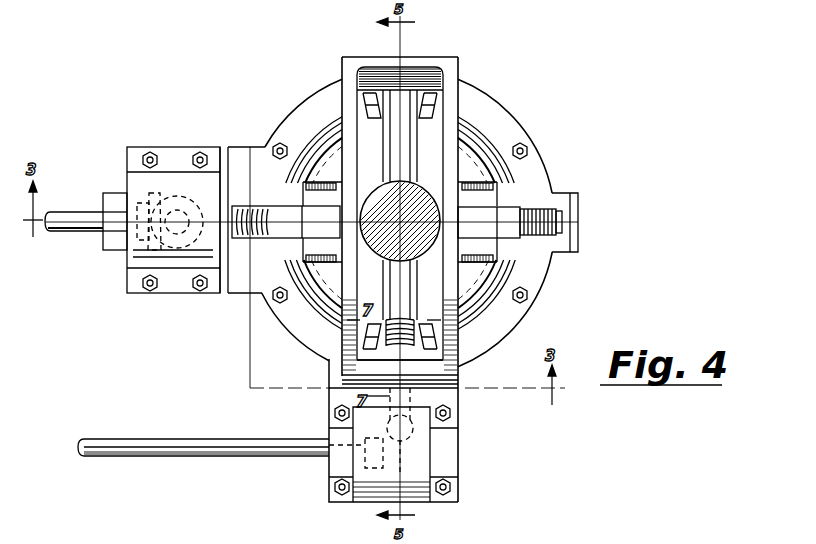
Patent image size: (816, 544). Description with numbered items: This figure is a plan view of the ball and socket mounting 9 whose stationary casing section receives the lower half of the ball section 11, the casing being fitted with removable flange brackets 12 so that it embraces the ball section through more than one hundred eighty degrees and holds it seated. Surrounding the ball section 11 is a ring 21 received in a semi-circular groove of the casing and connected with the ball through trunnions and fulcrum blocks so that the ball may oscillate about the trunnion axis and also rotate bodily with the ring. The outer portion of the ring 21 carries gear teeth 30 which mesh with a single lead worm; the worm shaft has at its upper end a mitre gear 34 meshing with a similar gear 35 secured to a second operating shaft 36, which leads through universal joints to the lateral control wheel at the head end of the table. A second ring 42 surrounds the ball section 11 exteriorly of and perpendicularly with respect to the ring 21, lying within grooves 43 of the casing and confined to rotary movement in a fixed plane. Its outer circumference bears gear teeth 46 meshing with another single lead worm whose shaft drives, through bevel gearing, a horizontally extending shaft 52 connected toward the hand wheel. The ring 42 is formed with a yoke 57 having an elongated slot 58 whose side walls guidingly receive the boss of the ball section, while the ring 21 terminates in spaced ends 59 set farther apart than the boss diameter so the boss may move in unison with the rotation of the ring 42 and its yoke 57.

The ball and socket mounting 9 is at (513, 116).
The ball section 11 is at (463, 148).
The removable flange brackets 12 is at (507, 183).
The ring 21 is at (403, 100).
The gear teeth 30 is at (396, 347).
The mitre gear 34 is at (404, 433).
The mitre gear 35 is at (387, 455).
The operating shaft 36 is at (134, 440).
The second ring 42 is at (553, 232).
The grooves 43 is at (572, 213).
The gear teeth 46 is at (243, 212).
The horizontally extending shaft 52 is at (58, 209).
The yoke 57 is at (368, 68).
The elongated slot 58 is at (358, 127).
The spaced ends 59 is at (395, 182).